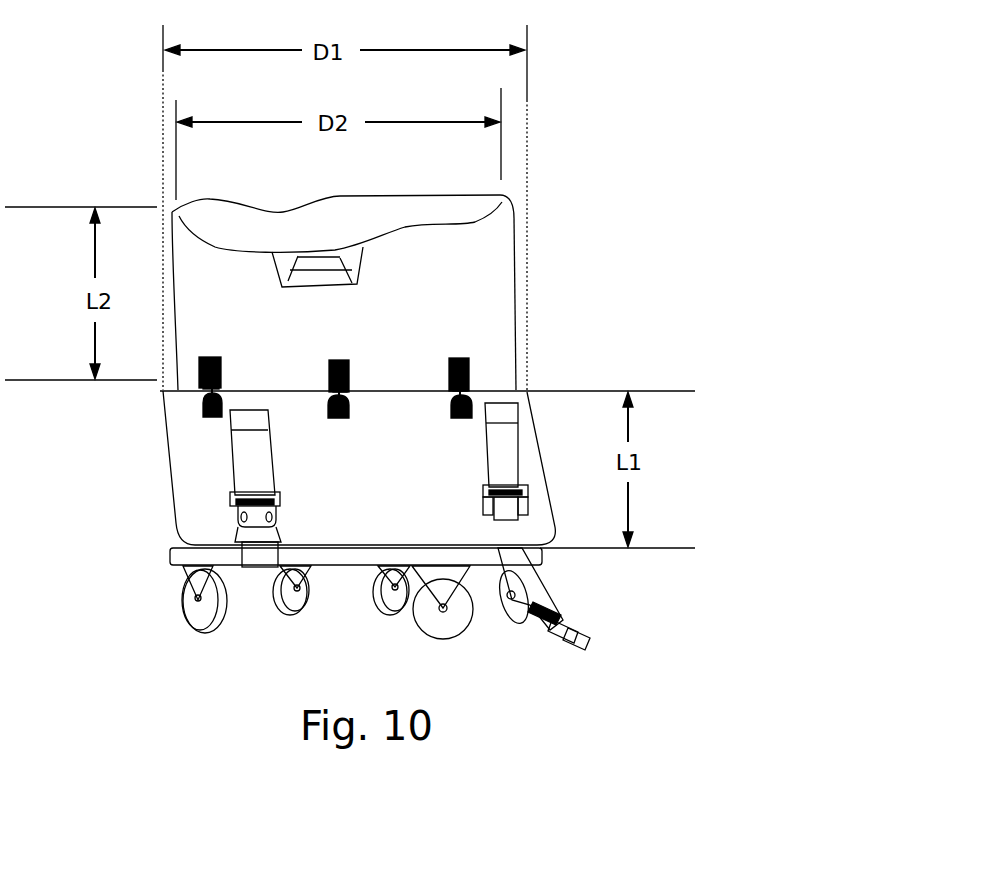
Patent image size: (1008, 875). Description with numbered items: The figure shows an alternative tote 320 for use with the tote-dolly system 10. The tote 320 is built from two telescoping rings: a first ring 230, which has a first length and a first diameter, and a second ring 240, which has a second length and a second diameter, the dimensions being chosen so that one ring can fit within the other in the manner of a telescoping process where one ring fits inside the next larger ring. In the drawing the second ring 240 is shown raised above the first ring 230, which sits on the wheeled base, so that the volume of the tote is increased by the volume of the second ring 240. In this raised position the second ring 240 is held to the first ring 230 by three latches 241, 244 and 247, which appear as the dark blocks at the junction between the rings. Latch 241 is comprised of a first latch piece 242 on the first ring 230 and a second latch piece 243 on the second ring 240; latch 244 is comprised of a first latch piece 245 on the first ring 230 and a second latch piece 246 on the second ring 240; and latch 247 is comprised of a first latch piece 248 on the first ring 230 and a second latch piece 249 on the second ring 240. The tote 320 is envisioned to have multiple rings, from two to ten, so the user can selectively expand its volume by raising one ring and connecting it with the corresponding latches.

The tote-dolly system 10 is at (143, 180).
The second ring 240 is at (262, 203).
The alternative tote 320 is at (513, 230).
The second latch piece 243 is at (222, 362).
The latch 241 is at (232, 383).
The first latch piece 242 is at (200, 402).
The second latch piece 246 is at (349, 362).
The latch 244 is at (355, 382).
The first latch piece 245 is at (322, 412).
The second latch piece 249 is at (470, 362).
The latch 247 is at (478, 382).
The first latch piece 248 is at (447, 400).
The first ring 230 is at (560, 540).